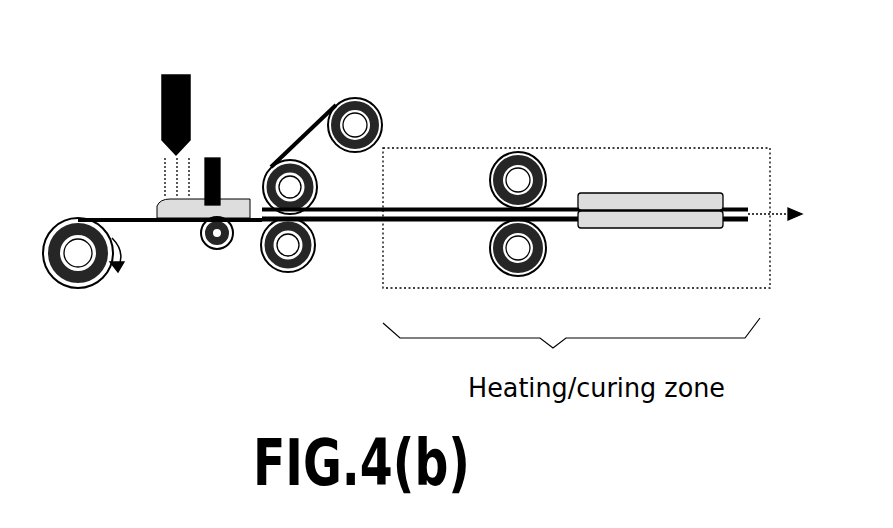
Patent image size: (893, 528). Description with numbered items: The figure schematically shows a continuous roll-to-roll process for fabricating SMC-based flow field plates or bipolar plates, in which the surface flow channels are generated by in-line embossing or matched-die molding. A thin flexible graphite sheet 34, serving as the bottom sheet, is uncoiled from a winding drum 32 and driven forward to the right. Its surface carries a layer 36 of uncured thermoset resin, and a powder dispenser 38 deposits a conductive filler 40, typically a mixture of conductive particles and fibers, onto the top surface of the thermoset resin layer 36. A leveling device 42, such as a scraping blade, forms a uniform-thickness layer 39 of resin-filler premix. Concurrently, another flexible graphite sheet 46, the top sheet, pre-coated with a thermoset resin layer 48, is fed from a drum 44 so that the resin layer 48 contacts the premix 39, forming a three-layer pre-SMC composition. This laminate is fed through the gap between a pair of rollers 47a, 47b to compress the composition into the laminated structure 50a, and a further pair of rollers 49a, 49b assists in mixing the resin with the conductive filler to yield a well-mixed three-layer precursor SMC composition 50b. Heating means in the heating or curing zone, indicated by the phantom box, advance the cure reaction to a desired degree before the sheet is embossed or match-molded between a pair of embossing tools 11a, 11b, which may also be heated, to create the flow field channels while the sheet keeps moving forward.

The embossing tool 11a is at (632, 193).
The embossing tool 11b is at (633, 228).
The winding drum 32 is at (72, 288).
The flexible graphite sheet 34 is at (137, 227).
The uncured thermoset resin layer 36 is at (108, 212).
The powder dispenser 38 is at (180, 83).
The uniform-thickness layer of resin-filler premix 39 is at (243, 227).
The conductive filler 40 is at (163, 200).
The leveling device 42 is at (210, 158).
The drum 44 is at (383, 108).
The flexible graphite sheet 46 is at (312, 132).
The roller 47a is at (328, 228).
The roller 47b is at (283, 272).
The thermoset resin layer 48 is at (283, 137).
The roller 49a is at (520, 152).
The roller 49b is at (505, 276).
The laminated structure 50a is at (413, 208).
The well-mixed three-layer precursor SMC composition 50b is at (555, 212).